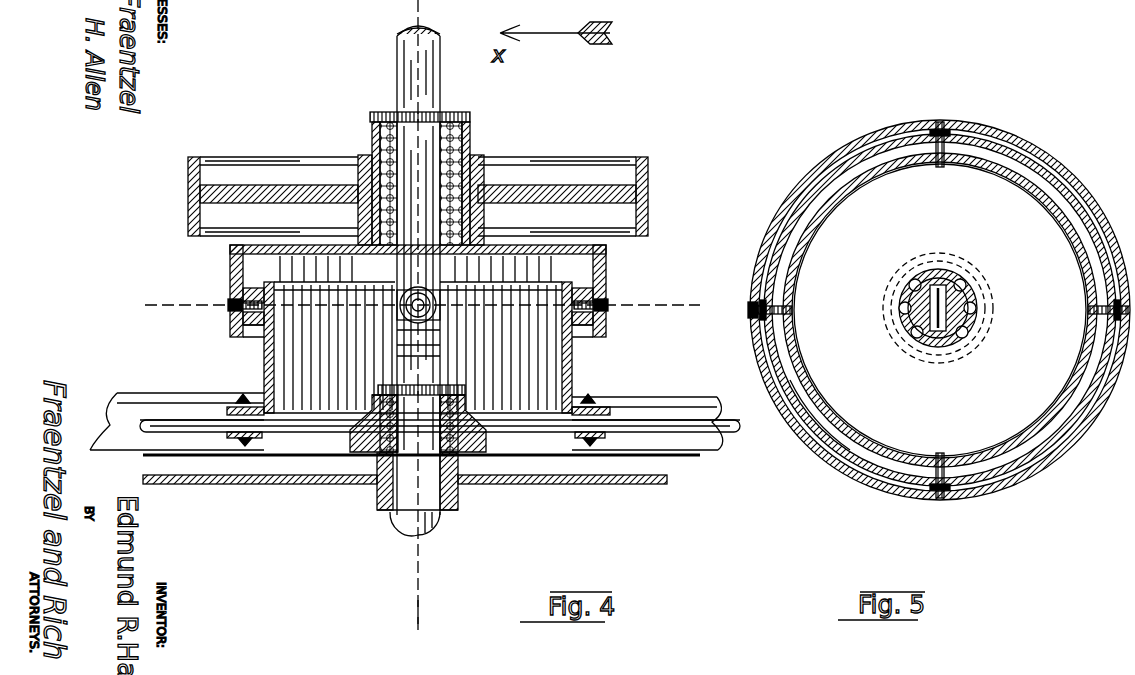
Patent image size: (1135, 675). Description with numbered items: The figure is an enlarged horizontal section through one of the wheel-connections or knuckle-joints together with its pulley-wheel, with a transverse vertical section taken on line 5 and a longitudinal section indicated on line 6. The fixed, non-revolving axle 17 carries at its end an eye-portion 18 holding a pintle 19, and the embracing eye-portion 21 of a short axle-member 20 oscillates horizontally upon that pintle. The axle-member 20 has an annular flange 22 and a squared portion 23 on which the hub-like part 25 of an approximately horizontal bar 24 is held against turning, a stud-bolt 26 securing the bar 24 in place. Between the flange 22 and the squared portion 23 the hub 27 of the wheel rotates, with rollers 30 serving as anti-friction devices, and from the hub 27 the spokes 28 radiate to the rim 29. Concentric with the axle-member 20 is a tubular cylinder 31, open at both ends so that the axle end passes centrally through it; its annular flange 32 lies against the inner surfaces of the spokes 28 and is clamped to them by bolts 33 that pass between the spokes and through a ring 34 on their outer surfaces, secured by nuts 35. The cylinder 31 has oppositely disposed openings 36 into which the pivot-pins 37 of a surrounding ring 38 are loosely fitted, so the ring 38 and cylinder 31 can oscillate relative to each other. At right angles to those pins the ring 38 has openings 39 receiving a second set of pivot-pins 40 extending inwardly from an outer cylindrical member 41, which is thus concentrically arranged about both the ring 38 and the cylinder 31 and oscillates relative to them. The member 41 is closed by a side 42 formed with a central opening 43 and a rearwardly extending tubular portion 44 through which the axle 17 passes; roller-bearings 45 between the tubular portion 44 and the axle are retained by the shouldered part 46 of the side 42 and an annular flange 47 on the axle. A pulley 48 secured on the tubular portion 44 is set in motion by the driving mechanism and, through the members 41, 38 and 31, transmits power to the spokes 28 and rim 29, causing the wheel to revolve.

In FIG. 4, the section line 5- 5 is at (418, 309).
In FIG. 4, the section line 6- 6 is at (429, 617).
In FIG. 4, the axle 17 is at (397, 50).
In FIG. 4, the eye-portion 18 is at (405, 305).
In FIG. 5, the eye-portion 18 is at (915, 327).
In FIG. 4, the pintle 19 is at (432, 303).
In FIG. 5, the pintle 19 is at (977, 301).
In FIG. 4, the axle-member 20 is at (397, 345).
In FIG. 4, the embracing eye-portion 21 is at (440, 334).
In FIG. 5, the embracing eye-portion 21 is at (965, 290).
In FIG. 4, the annular flange 22 is at (395, 385).
In FIG. 4, the squared portion 23 is at (388, 520).
In FIG. 4, the bar 24 is at (421, 490).
In FIG. 4, the hub-like part 25 is at (462, 506).
In FIG. 4, the stud-bolt 26 is at (438, 522).
In FIG. 4, the hub 27 is at (378, 462).
In FIG. 4, the spokes 28 is at (117, 398).
In FIG. 4, the rim 29 is at (160, 393).
In FIG. 4, the rollers 30 is at (378, 402).
In FIG. 4, the tubular cylinder 31 is at (266, 368).
In FIG. 5, the tubular cylinder 31 is at (802, 264).
In FIG. 4, the annular flange 32 is at (240, 408).
In FIG. 4, the bolts 33 is at (240, 397).
In FIG. 4, the ring 34 is at (275, 440).
In FIG. 4, the nuts 35 is at (245, 448).
In FIG. 5, the openings 36 is at (944, 167).
In FIG. 5, the pivot-pins 37 is at (990, 133).
In FIG. 4, the ring 38 is at (258, 337).
In FIG. 5, the ring 38 is at (830, 228).
In FIG. 4, the openings 39 is at (250, 296).
In FIG. 5, the openings 39 is at (795, 309).
In FIG. 4, the pivot-pins 40 is at (232, 308).
In FIG. 5, the pivot-pins 40 is at (752, 305).
In FIG. 4, the cylindrical member 41 is at (243, 330).
In FIG. 5, the cylindrical member 41 is at (795, 183).
In FIG. 4, the closed side 42 is at (262, 247).
In FIG. 5, the closed side 42 is at (835, 457).
In FIG. 4, the opening 43 is at (438, 296).
In FIG. 5, the opening 43 is at (930, 347).
In FIG. 4, the tubular portion 44 is at (472, 126).
In FIG. 4, the roller-bearings 45 is at (372, 152).
In FIG. 5, the roller-bearings 45 is at (910, 287).
In FIG. 4, the shouldered part 46 is at (352, 248).
In FIG. 4, the annular flange 47 is at (447, 112).
In FIG. 4, the pulley 48 is at (188, 202).